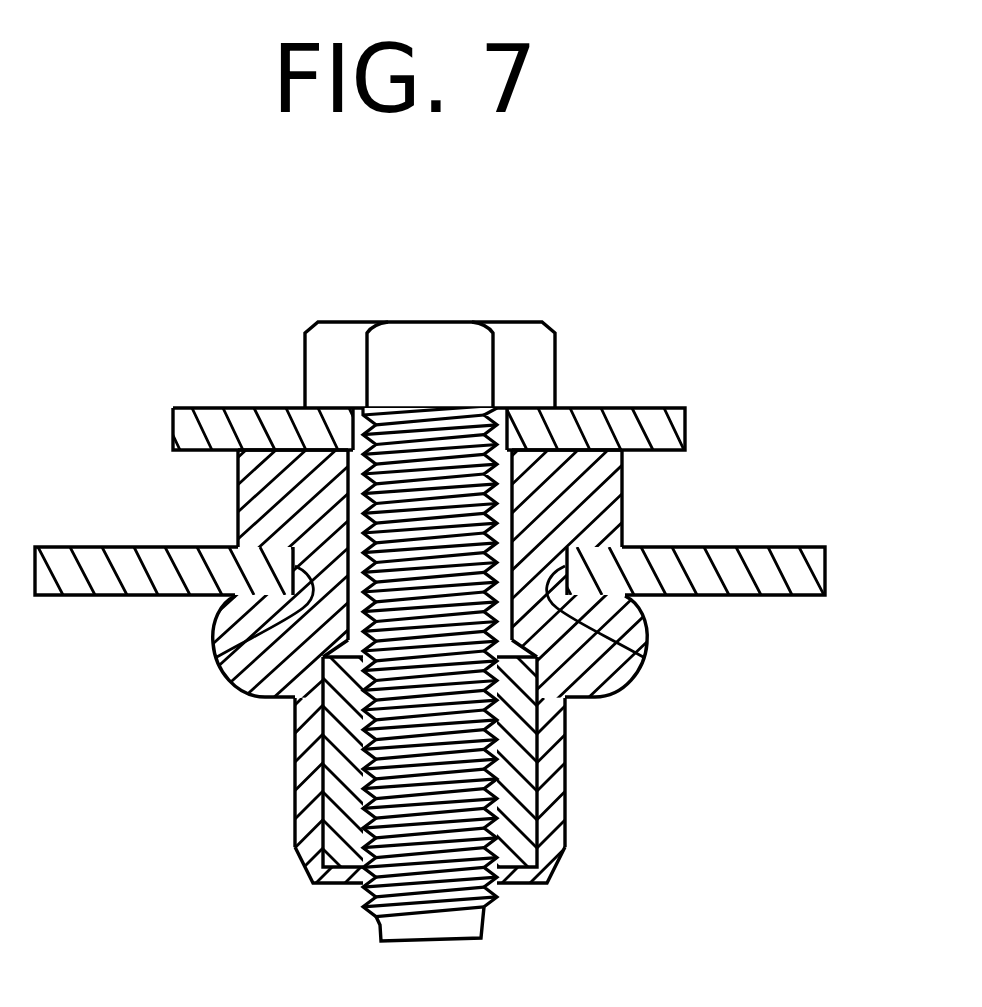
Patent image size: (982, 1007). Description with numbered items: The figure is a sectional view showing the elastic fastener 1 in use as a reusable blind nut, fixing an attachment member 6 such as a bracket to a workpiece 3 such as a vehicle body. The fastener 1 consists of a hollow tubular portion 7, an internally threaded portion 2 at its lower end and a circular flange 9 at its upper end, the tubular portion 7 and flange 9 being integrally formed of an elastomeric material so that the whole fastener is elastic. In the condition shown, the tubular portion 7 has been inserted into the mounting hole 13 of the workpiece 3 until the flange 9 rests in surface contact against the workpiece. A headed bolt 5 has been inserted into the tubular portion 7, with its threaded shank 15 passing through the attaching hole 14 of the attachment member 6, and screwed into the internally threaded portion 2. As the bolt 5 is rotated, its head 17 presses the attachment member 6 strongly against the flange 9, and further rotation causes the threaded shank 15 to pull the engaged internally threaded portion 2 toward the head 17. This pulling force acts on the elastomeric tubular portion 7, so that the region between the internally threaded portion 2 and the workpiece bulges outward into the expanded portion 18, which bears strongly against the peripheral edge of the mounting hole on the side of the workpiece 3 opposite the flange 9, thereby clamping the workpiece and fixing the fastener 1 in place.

The elastic fastener 1 is at (454, 642).
The internally threaded portion 2 is at (317, 883).
The workpiece 3 is at (784, 565).
The headed bolt 5 is at (464, 604).
The attachment member 6 is at (652, 408).
The tubular portion 7 is at (567, 760).
The flange 9 is at (622, 498).
The mounting hole 13 is at (340, 636).
The attaching hole 14 is at (377, 408).
The threaded shank 15 is at (487, 895).
The head 17 is at (460, 345).
The expanded portion 18 is at (252, 696).